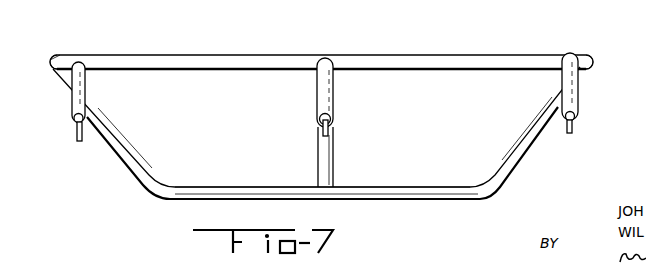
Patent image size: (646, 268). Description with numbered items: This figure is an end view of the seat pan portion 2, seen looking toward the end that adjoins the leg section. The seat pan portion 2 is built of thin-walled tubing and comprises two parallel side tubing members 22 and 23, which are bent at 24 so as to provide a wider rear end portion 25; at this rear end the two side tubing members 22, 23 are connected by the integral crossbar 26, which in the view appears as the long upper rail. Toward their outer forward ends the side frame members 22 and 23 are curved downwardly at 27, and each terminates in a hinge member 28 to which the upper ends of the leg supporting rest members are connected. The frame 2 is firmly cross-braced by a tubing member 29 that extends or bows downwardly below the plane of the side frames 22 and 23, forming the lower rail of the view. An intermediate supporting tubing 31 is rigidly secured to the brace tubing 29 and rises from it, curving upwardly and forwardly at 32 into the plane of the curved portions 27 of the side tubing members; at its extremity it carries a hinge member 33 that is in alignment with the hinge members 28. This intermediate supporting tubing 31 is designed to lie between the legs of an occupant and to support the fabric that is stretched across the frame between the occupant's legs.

The seat pan portion 2 is at (114, 169).
The side tubing member 22 is at (72, 91).
The side tubing member 23 is at (569, 55).
The bend 24 is at (61, 63).
The rear end portion 25 is at (53, 62).
The crossbar 26 is at (258, 57).
The curved portion 27 is at (72, 108).
The hinge member 28 is at (76, 139).
The tubing member 29 is at (245, 189).
The intermediate supporting tubing 31 is at (333, 170).
The curved portion of intermediate supporting tubing 32 is at (327, 88).
The hinge member 33 is at (330, 129).